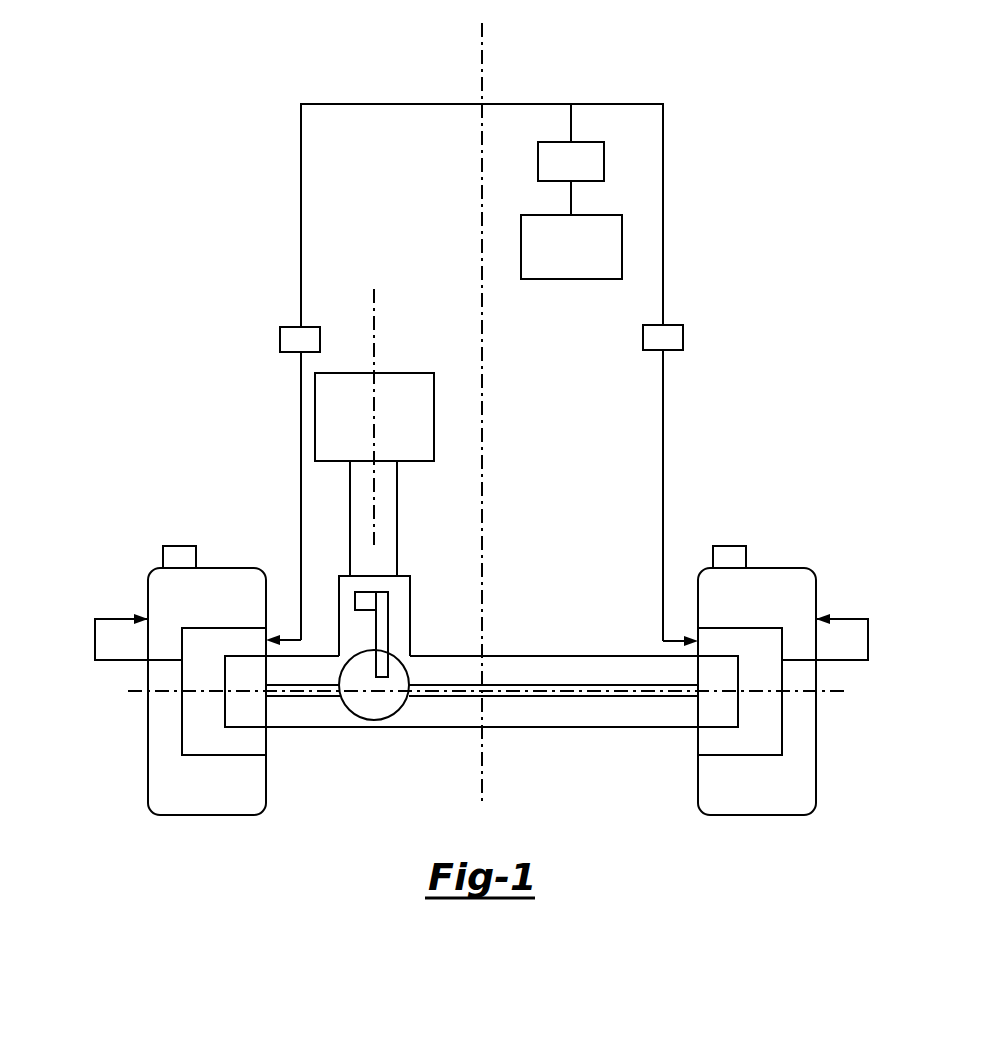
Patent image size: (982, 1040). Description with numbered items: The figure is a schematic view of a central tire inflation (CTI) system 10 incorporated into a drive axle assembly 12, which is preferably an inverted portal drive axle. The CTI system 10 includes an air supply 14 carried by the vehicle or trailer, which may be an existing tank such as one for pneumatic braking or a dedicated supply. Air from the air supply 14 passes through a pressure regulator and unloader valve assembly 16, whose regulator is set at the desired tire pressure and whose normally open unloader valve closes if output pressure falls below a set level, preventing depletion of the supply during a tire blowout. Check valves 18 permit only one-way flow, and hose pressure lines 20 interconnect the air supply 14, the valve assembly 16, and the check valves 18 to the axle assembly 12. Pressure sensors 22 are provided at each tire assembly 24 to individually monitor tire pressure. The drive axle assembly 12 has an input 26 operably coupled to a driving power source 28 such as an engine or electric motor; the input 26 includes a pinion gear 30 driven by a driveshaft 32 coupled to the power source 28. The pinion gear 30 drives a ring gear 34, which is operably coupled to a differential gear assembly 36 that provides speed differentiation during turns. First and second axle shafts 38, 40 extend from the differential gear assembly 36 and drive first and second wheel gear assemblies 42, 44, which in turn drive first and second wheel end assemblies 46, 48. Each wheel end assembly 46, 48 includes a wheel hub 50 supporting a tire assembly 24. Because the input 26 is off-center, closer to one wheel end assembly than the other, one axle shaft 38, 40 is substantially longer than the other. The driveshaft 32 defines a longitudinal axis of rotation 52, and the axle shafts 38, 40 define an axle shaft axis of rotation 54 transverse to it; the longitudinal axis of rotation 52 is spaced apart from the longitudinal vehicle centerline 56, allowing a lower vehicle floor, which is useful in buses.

The central tire inflation (CTI) system 10 is at (210, 88).
The drive axle assembly 12 is at (578, 752).
The air supply 14 is at (623, 245).
The pressure regulator and unloader valve assembly 16 is at (559, 176).
The check valves 18 is at (280, 339).
The hose pressure lines 20 is at (301, 215).
The pressure sensors 22 is at (180, 546).
The tire assembly 24 is at (190, 798).
The input 26 is at (434, 579).
The driving power source 28 is at (315, 417).
The pinion gear 30 is at (353, 600).
The driveshaft 32 is at (380, 520).
The ring gear 34 is at (383, 638).
The differential gear assembly 36 is at (387, 708).
The first axle shaft 38 is at (290, 694).
The second axle shaft 40 is at (548, 685).
The first wheel gear assembly 42 is at (247, 670).
The second wheel gear assembly 44 is at (726, 675).
The first wheel end assembly 46 is at (124, 769).
The second wheel end assembly 48 is at (847, 783).
The wheel hub 50 is at (193, 743).
The longitudinal axis of rotation 52 is at (374, 315).
The axle shaft axis of rotation 54 is at (128, 691).
The longitudinal vehicle centerline 56 is at (482, 77).